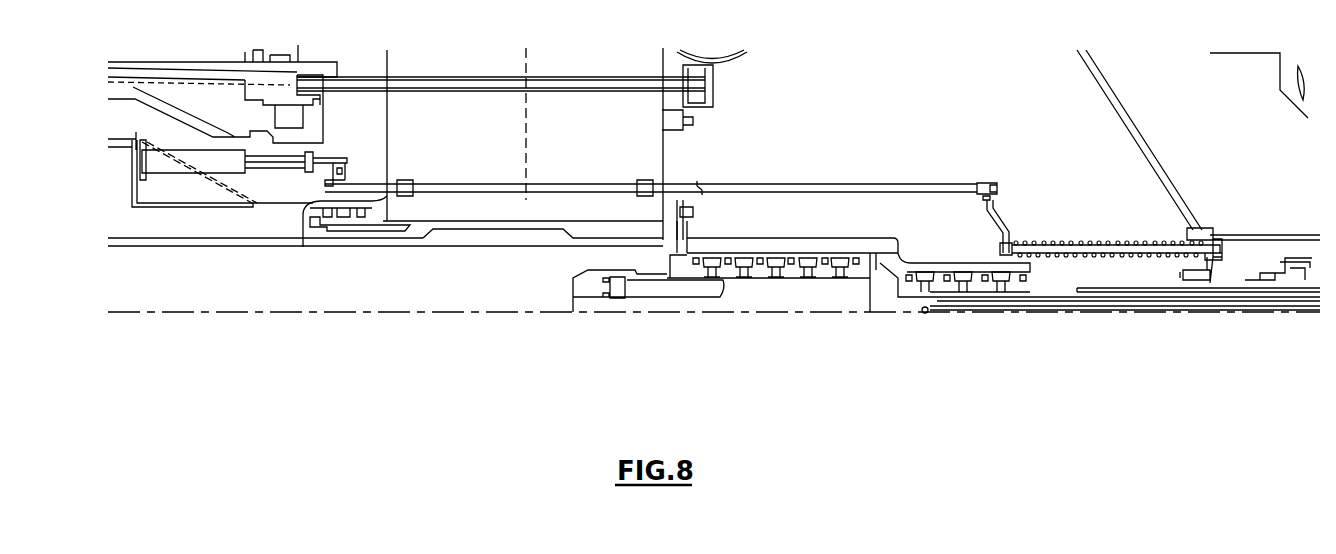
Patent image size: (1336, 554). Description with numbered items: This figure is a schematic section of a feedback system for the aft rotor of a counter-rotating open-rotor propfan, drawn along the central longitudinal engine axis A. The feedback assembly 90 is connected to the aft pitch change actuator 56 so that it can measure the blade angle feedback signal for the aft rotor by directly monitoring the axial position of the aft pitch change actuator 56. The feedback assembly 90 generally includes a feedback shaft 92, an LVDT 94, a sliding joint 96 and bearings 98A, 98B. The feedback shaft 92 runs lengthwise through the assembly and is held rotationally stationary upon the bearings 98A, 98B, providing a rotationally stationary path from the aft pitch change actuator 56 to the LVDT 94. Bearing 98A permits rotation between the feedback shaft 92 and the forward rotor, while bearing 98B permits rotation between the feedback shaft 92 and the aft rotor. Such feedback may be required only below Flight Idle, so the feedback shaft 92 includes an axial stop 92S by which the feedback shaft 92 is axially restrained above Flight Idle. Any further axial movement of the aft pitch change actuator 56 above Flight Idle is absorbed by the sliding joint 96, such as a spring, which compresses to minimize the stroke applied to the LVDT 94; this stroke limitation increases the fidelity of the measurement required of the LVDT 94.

The feedback assembly 90 is at (867, 168).
The feedback shaft 92 is at (785, 188).
The axial stop 92S is at (698, 182).
The LVDT 94 is at (185, 172).
The sliding joint 96 is at (1123, 225).
The bearing 98A is at (313, 203).
The bearing 98B is at (990, 181).
The aft pitch change actuator 56 is at (1270, 280).
The central longitudinal engine axis A is at (268, 313).